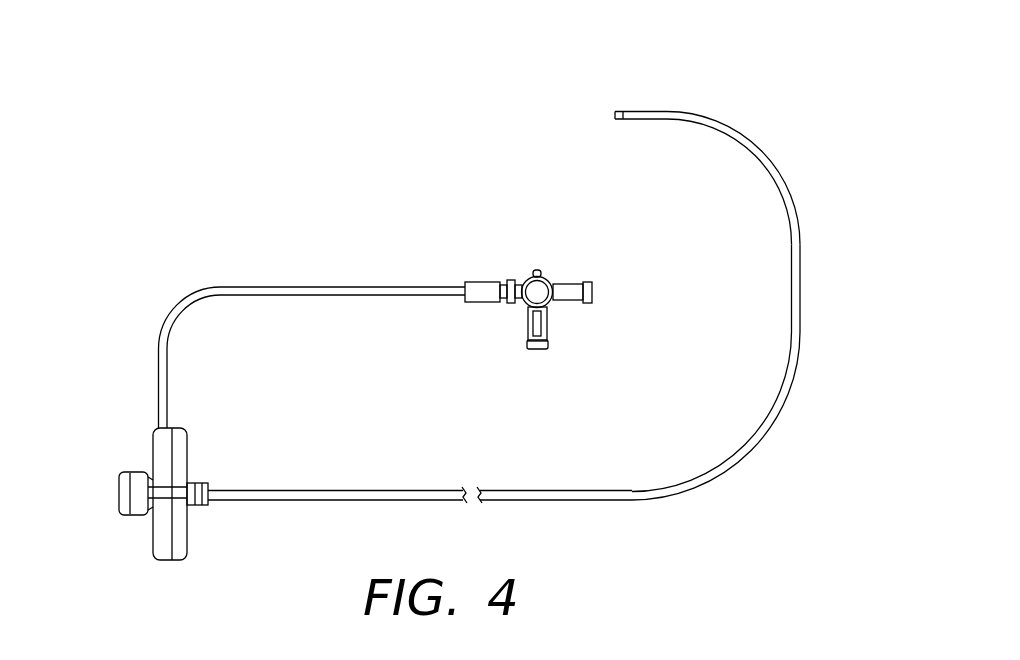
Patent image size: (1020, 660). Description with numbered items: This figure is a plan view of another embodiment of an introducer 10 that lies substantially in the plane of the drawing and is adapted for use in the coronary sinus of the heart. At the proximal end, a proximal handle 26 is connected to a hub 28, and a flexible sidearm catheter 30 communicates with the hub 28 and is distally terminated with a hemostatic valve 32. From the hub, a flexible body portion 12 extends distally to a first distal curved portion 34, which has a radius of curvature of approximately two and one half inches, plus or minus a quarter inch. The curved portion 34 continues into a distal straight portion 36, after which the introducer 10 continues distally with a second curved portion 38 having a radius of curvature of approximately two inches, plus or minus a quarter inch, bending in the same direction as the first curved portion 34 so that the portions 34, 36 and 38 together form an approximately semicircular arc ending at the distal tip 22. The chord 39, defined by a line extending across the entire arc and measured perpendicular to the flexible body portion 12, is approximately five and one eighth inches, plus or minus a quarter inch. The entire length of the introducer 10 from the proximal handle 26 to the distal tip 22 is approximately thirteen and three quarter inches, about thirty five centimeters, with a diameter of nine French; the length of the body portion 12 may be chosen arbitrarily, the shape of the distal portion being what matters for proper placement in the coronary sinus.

The introducer 10 is at (338, 175).
The flexible body portion 12 is at (584, 469).
The distal tip 22 is at (615, 110).
The proximal handle 26 is at (195, 437).
The hub 28 is at (138, 478).
The flexible sidearm catheter 30 is at (362, 297).
The hemostatic valve 32 is at (524, 278).
The first distal curved portion 34 is at (828, 373).
The distal straight portion 36 is at (834, 214).
The second curved portion 38 is at (825, 212).
The chord 39 is at (596, 498).